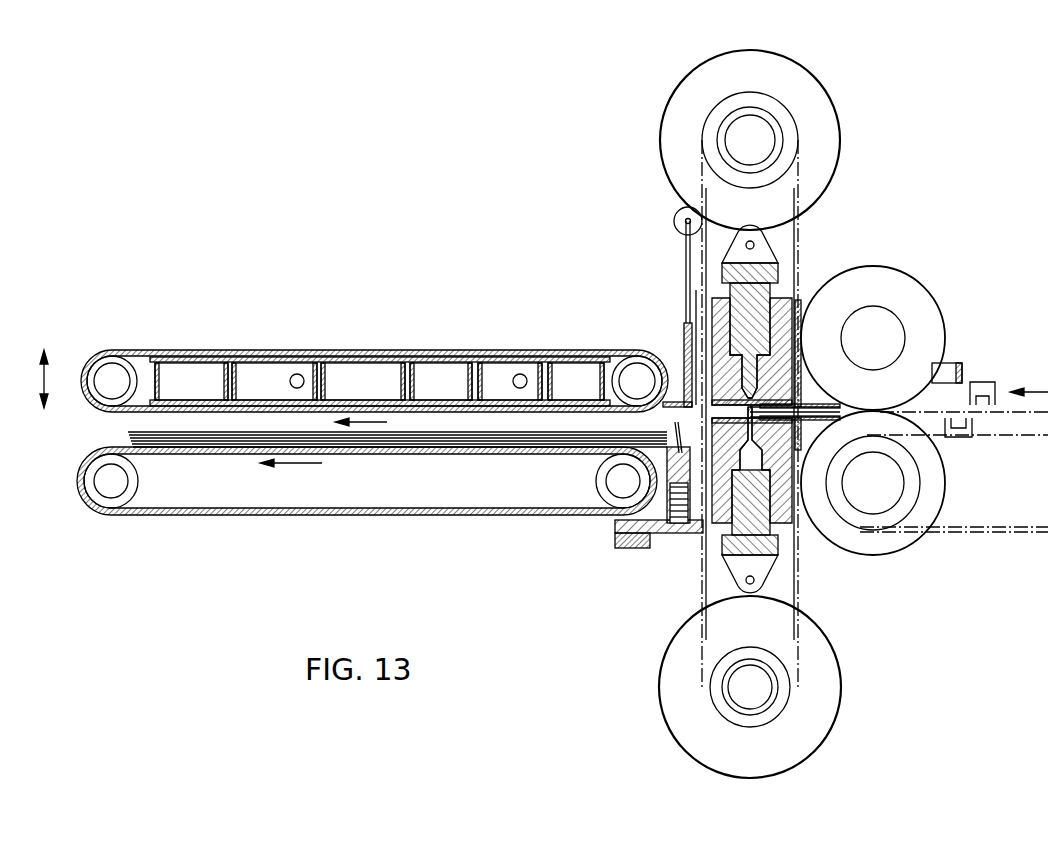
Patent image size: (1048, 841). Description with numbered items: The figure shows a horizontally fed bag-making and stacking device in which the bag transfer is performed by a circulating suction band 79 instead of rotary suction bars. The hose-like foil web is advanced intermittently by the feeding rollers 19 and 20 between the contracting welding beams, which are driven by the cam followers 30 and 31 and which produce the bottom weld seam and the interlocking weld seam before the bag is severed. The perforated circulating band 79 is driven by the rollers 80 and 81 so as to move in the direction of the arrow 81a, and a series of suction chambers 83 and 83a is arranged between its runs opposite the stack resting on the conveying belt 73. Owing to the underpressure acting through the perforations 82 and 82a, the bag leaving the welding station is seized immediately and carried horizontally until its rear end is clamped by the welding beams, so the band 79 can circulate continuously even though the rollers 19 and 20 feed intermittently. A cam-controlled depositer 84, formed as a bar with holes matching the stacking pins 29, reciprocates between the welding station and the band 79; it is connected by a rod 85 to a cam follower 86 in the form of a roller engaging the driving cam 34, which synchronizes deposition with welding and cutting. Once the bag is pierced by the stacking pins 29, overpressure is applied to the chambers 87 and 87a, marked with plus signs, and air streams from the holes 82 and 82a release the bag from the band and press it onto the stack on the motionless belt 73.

The driving cam 34 is at (815, 110).
The cam follower 86 is at (676, 212).
The rod 85 is at (686, 243).
The cam-controlled depositer 84 is at (682, 400).
The cam follower 30 is at (778, 280).
The cam follower 31 is at (762, 538).
The feeding roller 19 is at (915, 302).
The feeding roller 20 is at (910, 548).
The roller 80 is at (112, 362).
The roller 81 is at (636, 360).
The circulating band 79 is at (272, 352).
The chamber 87 is at (175, 370).
The chamber 87a is at (357, 370).
The suction chamber 83 is at (245, 370).
The suction chamber 83a is at (447, 368).
The perforation 82 is at (495, 355).
The perforation 82a is at (548, 355).
The arrow 81a is at (363, 422).
The conveying belt 73 is at (430, 517).
The stacking pins 29 is at (623, 470).